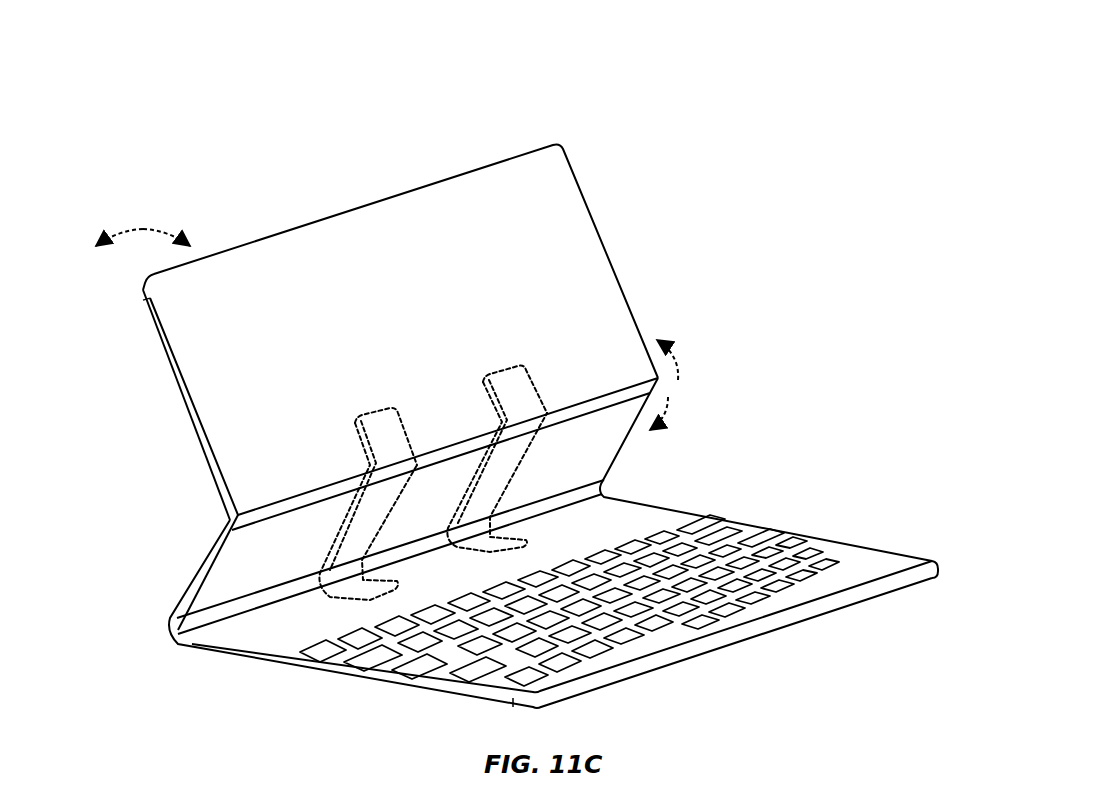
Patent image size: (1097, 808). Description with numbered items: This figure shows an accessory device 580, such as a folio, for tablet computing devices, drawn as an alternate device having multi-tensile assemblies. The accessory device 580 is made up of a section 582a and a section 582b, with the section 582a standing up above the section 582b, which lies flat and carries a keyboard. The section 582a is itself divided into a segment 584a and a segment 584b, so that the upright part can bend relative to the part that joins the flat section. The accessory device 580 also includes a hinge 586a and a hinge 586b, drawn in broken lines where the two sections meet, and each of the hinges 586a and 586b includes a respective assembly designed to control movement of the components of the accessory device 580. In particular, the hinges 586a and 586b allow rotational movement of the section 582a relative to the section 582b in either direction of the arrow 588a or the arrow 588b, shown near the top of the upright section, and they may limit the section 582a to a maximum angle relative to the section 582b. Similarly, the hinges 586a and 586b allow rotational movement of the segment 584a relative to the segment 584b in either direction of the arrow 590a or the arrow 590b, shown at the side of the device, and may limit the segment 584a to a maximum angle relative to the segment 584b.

The accessory device 580 is at (734, 114).
The section 582a is at (612, 223).
The section 582b is at (913, 520).
The segment 584a is at (182, 401).
The segment 584b is at (205, 553).
The hinge 586a is at (356, 455).
The hinge 586b is at (512, 481).
The arrow 588a is at (105, 232).
The arrow 588b is at (178, 232).
The arrow 590a is at (680, 358).
The arrow 590b is at (668, 409).